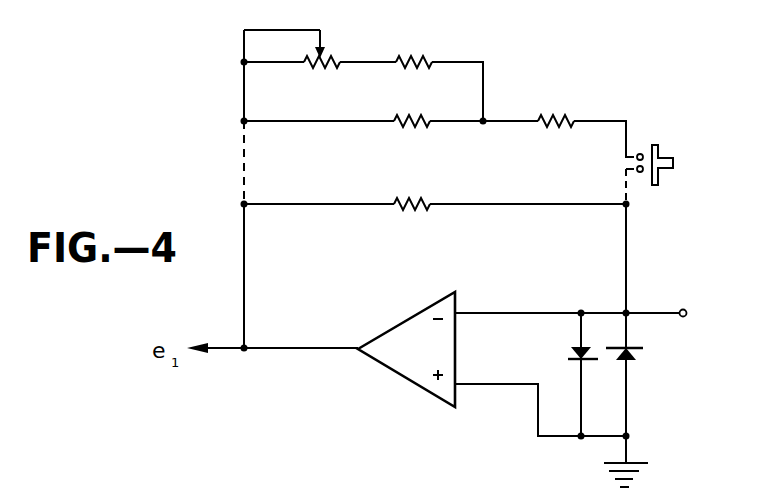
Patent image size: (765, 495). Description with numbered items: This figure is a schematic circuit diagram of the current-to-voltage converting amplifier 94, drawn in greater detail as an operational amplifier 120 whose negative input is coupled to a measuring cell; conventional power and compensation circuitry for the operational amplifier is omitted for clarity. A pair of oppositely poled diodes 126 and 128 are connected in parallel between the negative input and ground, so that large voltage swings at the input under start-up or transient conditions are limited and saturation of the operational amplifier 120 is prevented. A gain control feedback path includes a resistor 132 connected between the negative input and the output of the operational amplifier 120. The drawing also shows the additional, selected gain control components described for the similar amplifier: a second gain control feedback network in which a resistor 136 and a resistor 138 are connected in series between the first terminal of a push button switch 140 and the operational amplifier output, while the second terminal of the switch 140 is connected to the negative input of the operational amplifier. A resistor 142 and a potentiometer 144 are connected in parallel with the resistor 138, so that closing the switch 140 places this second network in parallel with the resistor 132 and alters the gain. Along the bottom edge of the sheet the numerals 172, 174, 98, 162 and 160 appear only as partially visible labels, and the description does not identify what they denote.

The current-to-voltage converting amplifier 94 is at (639, 262).
The operational amplifier 120 is at (400, 323).
The diode 126 is at (569, 358).
The diode 128 is at (638, 349).
The resistor 132 is at (414, 200).
The resistor 136 is at (554, 117).
The resistor 138 is at (414, 117).
The push button switch 140 is at (673, 160).
The resistor 142 is at (431, 57).
The potentiometer 144 is at (336, 57).
The component 172 is at (48, 491).
The component 174 is at (148, 494).
The component 98 is at (218, 491).
The component 162 is at (408, 493).
The component 160 is at (587, 488).